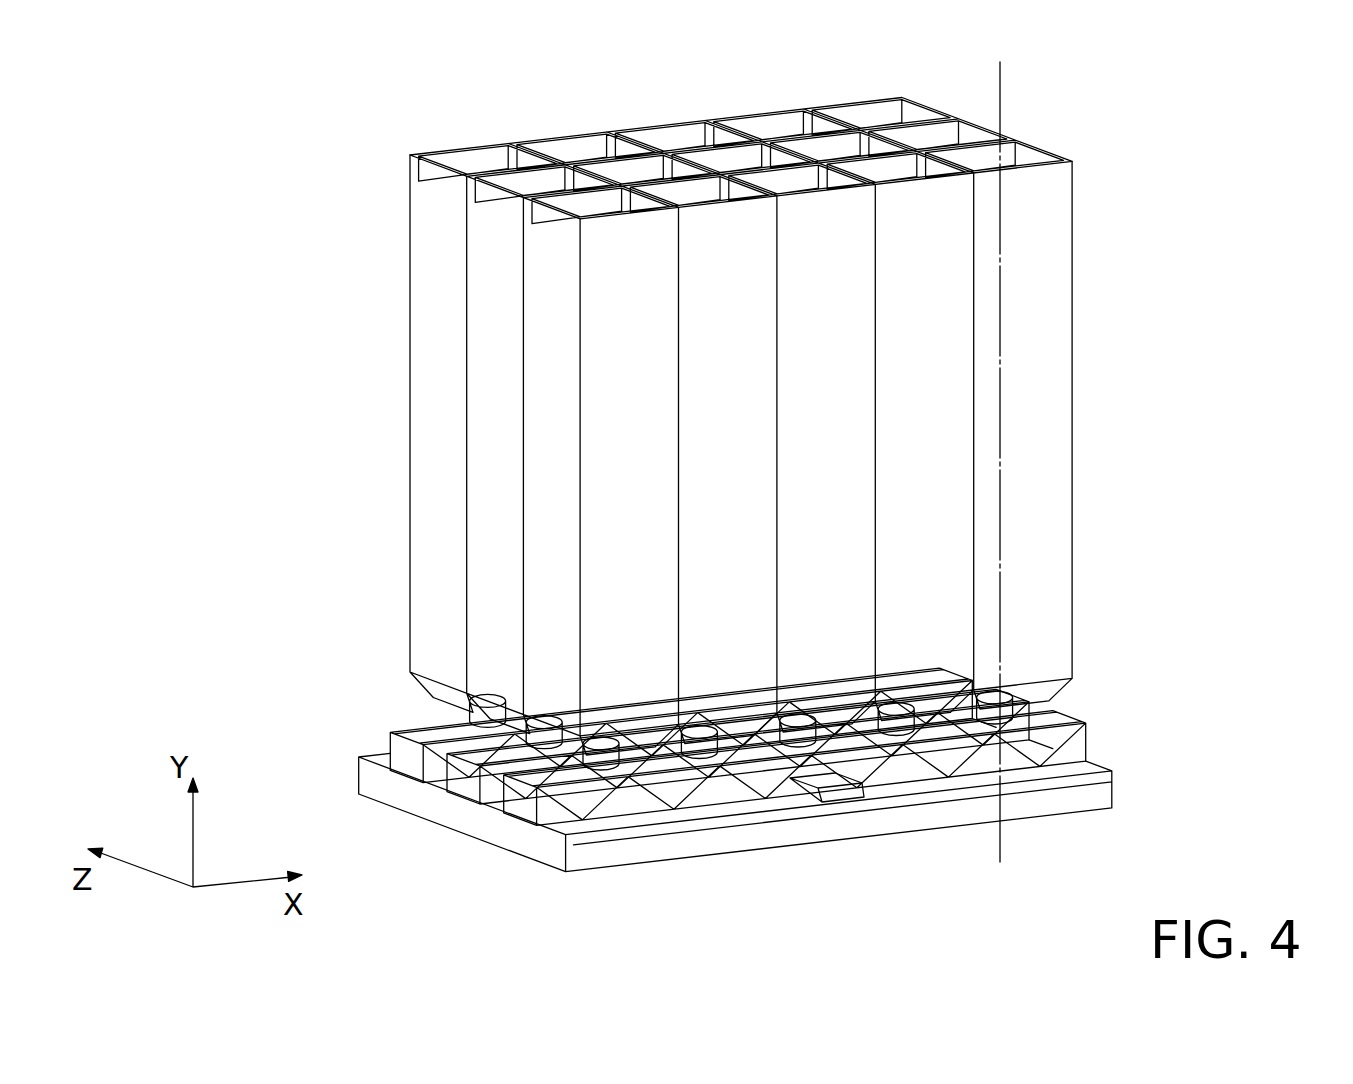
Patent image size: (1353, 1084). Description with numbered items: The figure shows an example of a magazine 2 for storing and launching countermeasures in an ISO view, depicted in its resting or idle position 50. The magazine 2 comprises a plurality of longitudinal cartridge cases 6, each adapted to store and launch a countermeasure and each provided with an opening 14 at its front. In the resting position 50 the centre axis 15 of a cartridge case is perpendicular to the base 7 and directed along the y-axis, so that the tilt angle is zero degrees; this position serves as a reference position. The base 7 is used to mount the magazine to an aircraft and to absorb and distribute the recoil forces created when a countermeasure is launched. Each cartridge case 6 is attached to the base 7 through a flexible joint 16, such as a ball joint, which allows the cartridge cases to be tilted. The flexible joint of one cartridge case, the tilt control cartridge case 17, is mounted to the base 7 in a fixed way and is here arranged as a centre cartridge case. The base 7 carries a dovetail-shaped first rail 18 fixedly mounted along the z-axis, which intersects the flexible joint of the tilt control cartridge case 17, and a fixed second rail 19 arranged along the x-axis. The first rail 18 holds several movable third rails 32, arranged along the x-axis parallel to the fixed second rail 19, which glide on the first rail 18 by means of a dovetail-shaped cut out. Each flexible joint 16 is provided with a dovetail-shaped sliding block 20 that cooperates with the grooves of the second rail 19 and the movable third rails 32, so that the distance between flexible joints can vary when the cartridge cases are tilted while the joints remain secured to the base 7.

The magazine 2 is at (1157, 207).
The resting or idle position 50 is at (1202, 277).
The cartridge case 6 is at (440, 291).
The opening 14 is at (476, 157).
The centre axis 15 is at (1000, 95).
The flexible joint 16 is at (1085, 701).
The tilt control cartridge case 17 is at (737, 161).
The base 7 is at (1100, 797).
The first rail 18 is at (845, 797).
The fixed second rail 19 is at (456, 793).
The sliding block 20 is at (1022, 735).
The movable third rail 32 is at (405, 765).